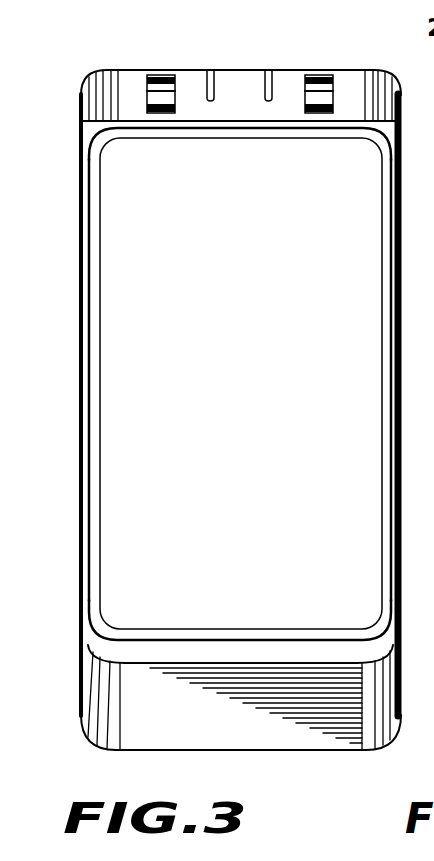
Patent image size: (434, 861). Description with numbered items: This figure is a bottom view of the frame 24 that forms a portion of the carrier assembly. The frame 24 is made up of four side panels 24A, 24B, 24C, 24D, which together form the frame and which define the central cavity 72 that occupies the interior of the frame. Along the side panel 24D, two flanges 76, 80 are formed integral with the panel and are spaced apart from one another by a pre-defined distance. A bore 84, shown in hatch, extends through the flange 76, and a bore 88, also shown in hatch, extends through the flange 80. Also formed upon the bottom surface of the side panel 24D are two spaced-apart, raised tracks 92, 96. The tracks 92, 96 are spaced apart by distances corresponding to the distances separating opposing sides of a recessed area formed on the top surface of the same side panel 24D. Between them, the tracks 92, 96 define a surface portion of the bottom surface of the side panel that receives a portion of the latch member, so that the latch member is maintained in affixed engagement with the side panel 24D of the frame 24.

The frame 24 is at (113, 57).
The side panel 24A is at (97, 205).
The side panel 24B is at (185, 713).
The side panel 24C is at (383, 209).
The side panel 24D is at (358, 90).
The central cavity 72 is at (113, 458).
The flange 76 is at (163, 90).
The flange 80 is at (310, 76).
The bore 84 is at (150, 73).
The bore 88 is at (320, 92).
The raised track 92 is at (210, 70).
The raised track 96 is at (268, 70).